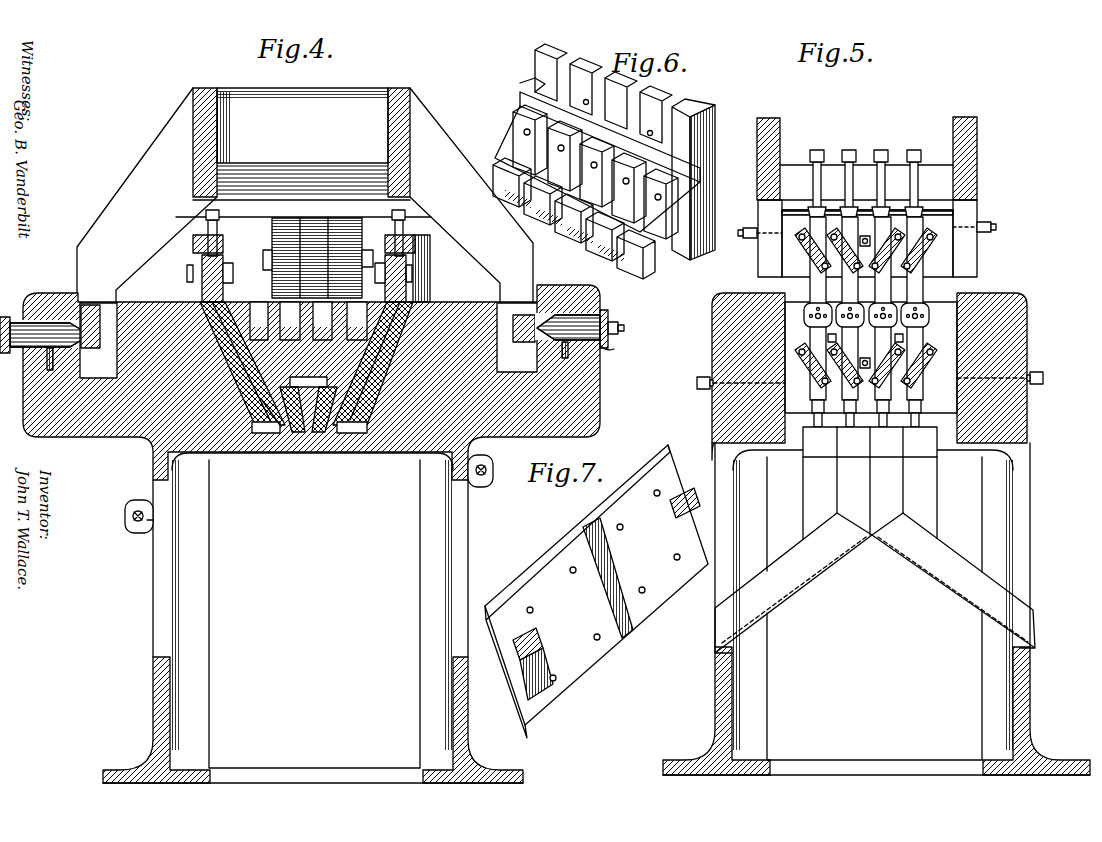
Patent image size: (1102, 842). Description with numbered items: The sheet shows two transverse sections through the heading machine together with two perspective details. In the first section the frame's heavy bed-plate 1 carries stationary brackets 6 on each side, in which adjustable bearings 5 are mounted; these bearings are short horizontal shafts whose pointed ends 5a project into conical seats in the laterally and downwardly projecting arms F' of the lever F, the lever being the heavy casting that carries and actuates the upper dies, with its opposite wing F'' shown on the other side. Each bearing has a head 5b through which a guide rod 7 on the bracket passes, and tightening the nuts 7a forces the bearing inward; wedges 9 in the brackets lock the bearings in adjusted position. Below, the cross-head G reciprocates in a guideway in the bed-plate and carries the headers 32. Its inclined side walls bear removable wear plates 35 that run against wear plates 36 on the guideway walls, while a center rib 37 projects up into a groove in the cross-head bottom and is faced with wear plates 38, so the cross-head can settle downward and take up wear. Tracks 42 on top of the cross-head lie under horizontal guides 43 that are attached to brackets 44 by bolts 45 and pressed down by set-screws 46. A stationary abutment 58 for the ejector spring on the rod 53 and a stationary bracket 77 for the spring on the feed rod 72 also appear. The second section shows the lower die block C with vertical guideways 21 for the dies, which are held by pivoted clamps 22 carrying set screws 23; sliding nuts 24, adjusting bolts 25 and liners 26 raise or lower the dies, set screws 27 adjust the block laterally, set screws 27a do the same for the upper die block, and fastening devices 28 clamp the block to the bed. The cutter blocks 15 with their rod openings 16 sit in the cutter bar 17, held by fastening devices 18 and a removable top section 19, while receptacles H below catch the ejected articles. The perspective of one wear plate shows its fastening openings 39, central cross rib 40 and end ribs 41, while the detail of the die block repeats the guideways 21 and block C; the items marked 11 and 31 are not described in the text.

In FIG. 4, the bed-plate 1 is at (214, 420).
In FIG. 5, the bed-plate 1 is at (758, 440).
In FIG. 4, the adjustable bearings 5 is at (40, 320).
In FIG. 4, the pointed ends 5a is at (90, 312).
In FIG. 4, the head 5b is at (615, 349).
In FIG. 4, the stationary brackets 6 is at (583, 396).
In FIG. 4, the guide rods 7 is at (625, 328).
In FIG. 4, the nuts 7a is at (610, 312).
In FIG. 4, the wedges 9 is at (48, 352).
In FIG. 5, the pivot screw 11 is at (742, 232).
In FIG. 5, the cutter blocks 15 is at (822, 310).
In FIG. 5, the opening 16 is at (853, 310).
In FIG. 5, the cutter bar 17 is at (887, 310).
In FIG. 5, the fastening devices 18 is at (828, 338).
In FIG. 5, the removable top section 19 is at (930, 310).
In FIG. 6, the guideways 21 is at (530, 135).
In FIG. 5, the clamps 22 is at (822, 236).
In FIG. 5, the set screws 23 is at (820, 262).
In FIG. 5, the nuts 24 is at (815, 210).
In FIG. 5, the adjusting bolts 25 is at (875, 440).
In FIG. 5, the liner 26 is at (820, 166).
In FIG. 5, the set screws 27 is at (700, 378).
In FIG. 5, the set screws 27a is at (745, 240).
In FIG. 5, the fastening devices 28 is at (866, 380).
In FIG. 5, the guide frame 31 is at (765, 300).
In FIG. 4, the headers 32 is at (266, 262).
In FIG. 4, the wear plates 35 is at (345, 428).
In FIG. 7, the wear plates 35 is at (548, 565).
In FIG. 4, the wear plates 36 is at (362, 420).
In FIG. 4, the center rib 37 is at (307, 432).
In FIG. 4, the wear plates 38 is at (292, 432).
In FIG. 7, the openings 39 is at (556, 680).
In FIG. 7, the cross rib 40 is at (630, 635).
In FIG. 7, the ribs 41 is at (555, 636).
In FIG. 4, the tracks 42 is at (205, 280).
In FIG. 4, the guides 43 is at (205, 268).
In FIG. 4, the brackets 44 is at (200, 244).
In FIG. 4, the bolts 45 is at (225, 262).
In FIG. 4, the set-screws 46 is at (220, 232).
In FIG. 4, the rod 53 is at (483, 476).
In FIG. 4, the stationary abutment 58 is at (493, 458).
In FIG. 4, the rod 72 is at (132, 532).
In FIG. 4, the stationary bracket 77 is at (138, 510).
In FIG. 4, the lever F is at (303, 152).
In FIG. 5, the lever F is at (867, 157).
In FIG. 4, the arms F' is at (147, 195).
In FIG. 4, the cover wing F'' is at (471, 195).
In FIG. 4, the cross-head G is at (275, 428).
In FIG. 6, the lower die block C is at (705, 126).
In FIG. 5, the receptacles H is at (886, 548).